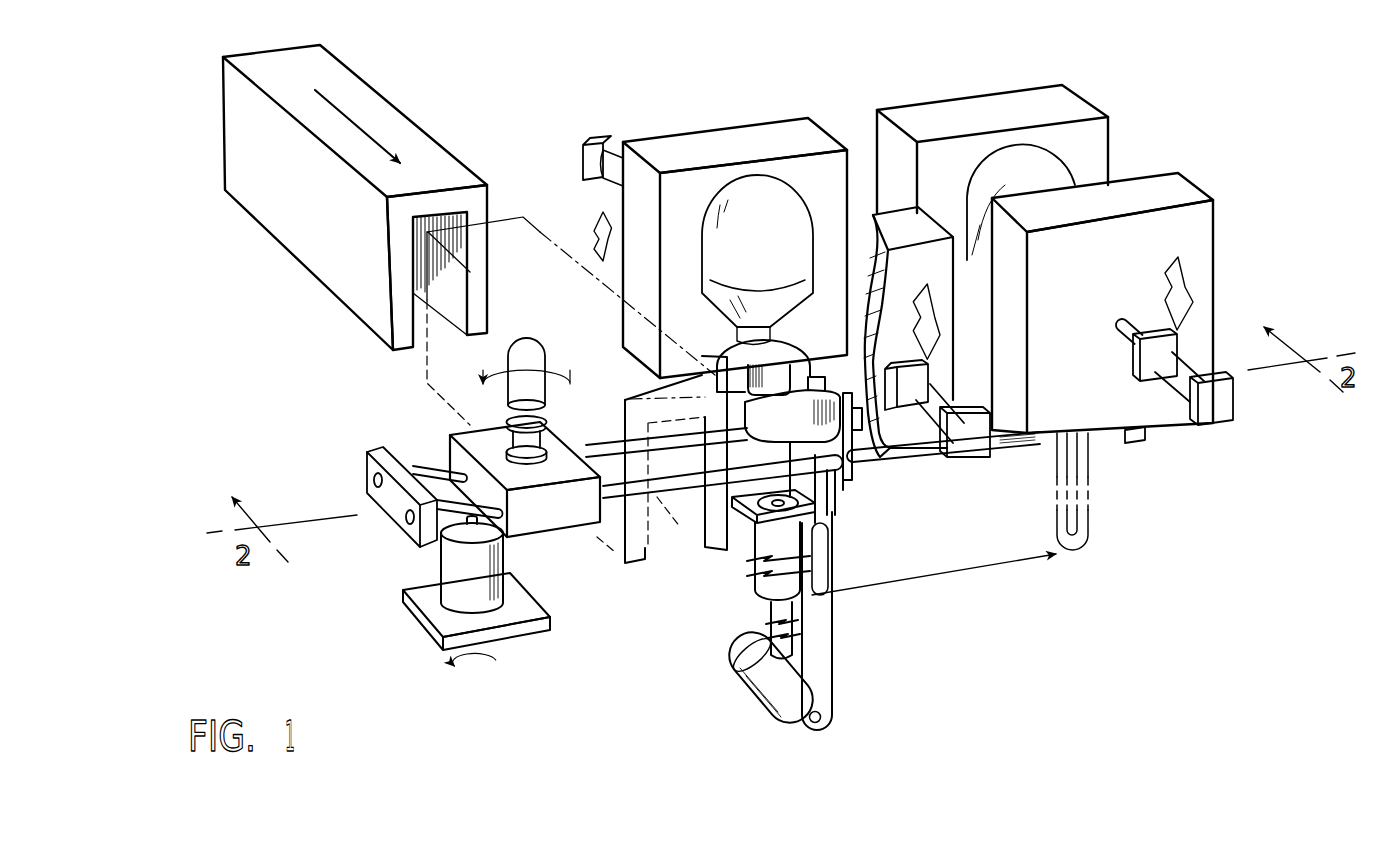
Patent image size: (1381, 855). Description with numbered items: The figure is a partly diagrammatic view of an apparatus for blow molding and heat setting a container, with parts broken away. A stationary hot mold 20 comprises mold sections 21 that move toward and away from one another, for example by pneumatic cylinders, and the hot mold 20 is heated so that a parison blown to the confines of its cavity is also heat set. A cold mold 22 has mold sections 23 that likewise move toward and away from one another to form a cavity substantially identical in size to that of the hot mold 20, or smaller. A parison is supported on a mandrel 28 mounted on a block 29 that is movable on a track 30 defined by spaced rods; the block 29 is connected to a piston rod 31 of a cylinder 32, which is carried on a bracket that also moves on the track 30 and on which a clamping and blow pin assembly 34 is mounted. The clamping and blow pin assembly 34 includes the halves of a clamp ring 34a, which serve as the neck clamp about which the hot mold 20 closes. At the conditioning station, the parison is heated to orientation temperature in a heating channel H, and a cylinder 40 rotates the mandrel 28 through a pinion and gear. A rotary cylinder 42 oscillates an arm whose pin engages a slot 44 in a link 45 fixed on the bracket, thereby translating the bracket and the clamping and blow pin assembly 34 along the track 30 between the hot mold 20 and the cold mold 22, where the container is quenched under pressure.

The heating channel H is at (328, 256).
The hot mold 20 is at (699, 120).
The mold sections 21 is at (934, 283).
The cold mold 22 is at (1118, 138).
The mold sections 23 is at (1195, 239).
The mandrel 28 is at (490, 437).
The block 29 is at (545, 522).
The track 30 is at (418, 470).
The piston rod 31 is at (616, 447).
The cylinder 32 is at (860, 468).
The clamping and blow pin assembly 34 is at (746, 542).
The clamp ring 34a is at (735, 358).
The cylinder 40 is at (450, 563).
The rotary cylinder 42 is at (745, 680).
The slot 44 is at (822, 533).
The link 45 is at (833, 593).